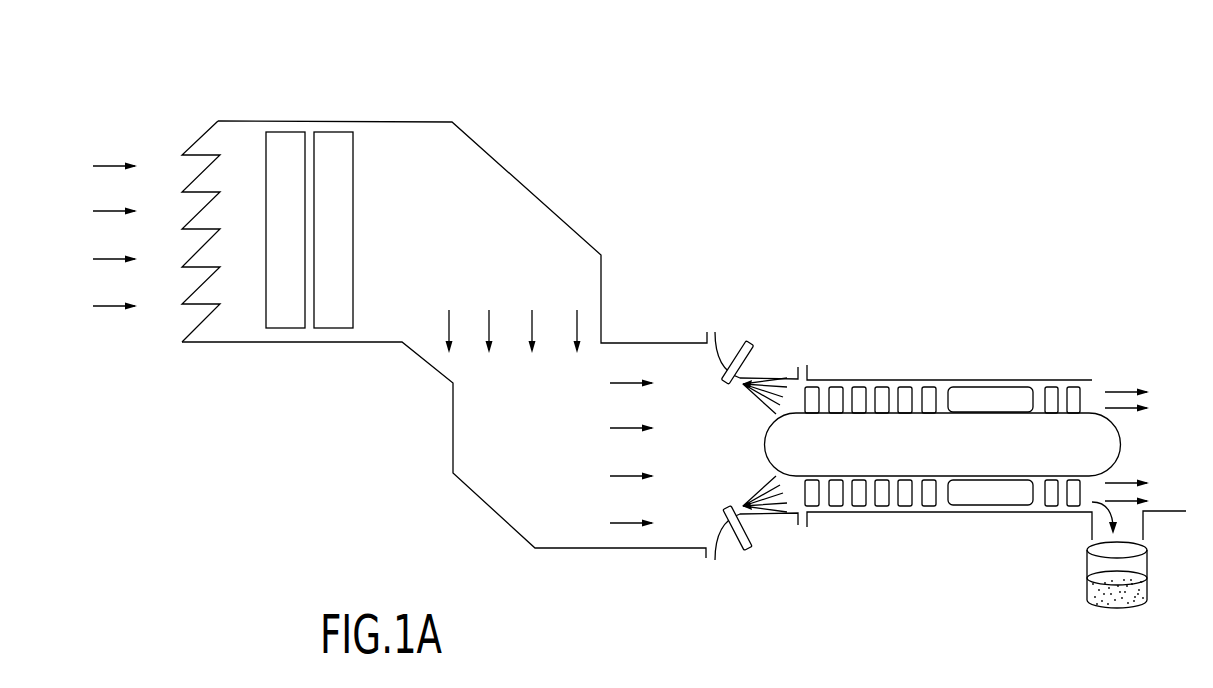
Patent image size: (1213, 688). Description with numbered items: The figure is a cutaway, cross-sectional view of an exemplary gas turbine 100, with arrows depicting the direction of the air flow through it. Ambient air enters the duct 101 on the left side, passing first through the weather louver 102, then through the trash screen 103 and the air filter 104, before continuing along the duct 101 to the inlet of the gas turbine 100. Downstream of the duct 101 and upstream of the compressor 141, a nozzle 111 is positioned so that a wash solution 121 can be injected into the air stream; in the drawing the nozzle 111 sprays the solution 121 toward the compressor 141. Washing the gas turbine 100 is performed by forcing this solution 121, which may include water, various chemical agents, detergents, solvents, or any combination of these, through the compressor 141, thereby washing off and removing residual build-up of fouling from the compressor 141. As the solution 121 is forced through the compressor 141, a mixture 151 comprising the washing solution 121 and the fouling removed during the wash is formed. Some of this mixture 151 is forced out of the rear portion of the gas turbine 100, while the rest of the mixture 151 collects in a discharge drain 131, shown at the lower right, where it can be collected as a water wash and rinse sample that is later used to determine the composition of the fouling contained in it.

The turbine 100 is at (840, 100).
The duct 101 is at (568, 226).
The weather louver 102 is at (205, 137).
The trash screen 103 is at (283, 137).
The air filter 104 is at (335, 137).
The nozzle 111 is at (745, 340).
The wash solution 121 is at (773, 388).
The discharge drain 131 is at (1088, 523).
The compressor 141 is at (902, 430).
The mixture 151 is at (1092, 595).